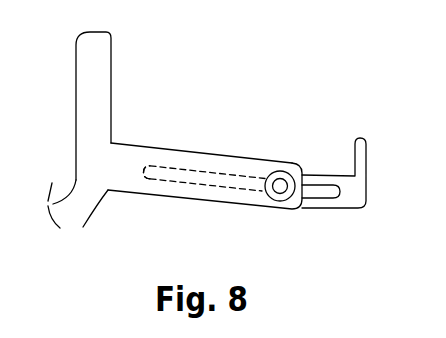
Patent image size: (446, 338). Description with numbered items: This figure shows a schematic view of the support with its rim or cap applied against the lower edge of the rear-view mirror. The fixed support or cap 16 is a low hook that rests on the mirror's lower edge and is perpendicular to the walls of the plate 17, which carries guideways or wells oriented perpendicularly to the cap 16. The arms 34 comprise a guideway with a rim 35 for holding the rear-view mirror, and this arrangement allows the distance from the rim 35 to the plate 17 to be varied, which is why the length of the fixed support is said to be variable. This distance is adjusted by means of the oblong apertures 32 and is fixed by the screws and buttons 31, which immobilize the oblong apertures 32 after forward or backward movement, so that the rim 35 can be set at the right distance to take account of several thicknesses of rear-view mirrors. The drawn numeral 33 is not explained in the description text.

The fixed support 16 is at (175, 150).
The plate 17 is at (98, 83).
The screw and button 31 is at (282, 187).
The oblong aperture 32 is at (233, 180).
The slot end 33 is at (163, 185).
The arm 34 is at (252, 145).
The rim 35 is at (367, 148).